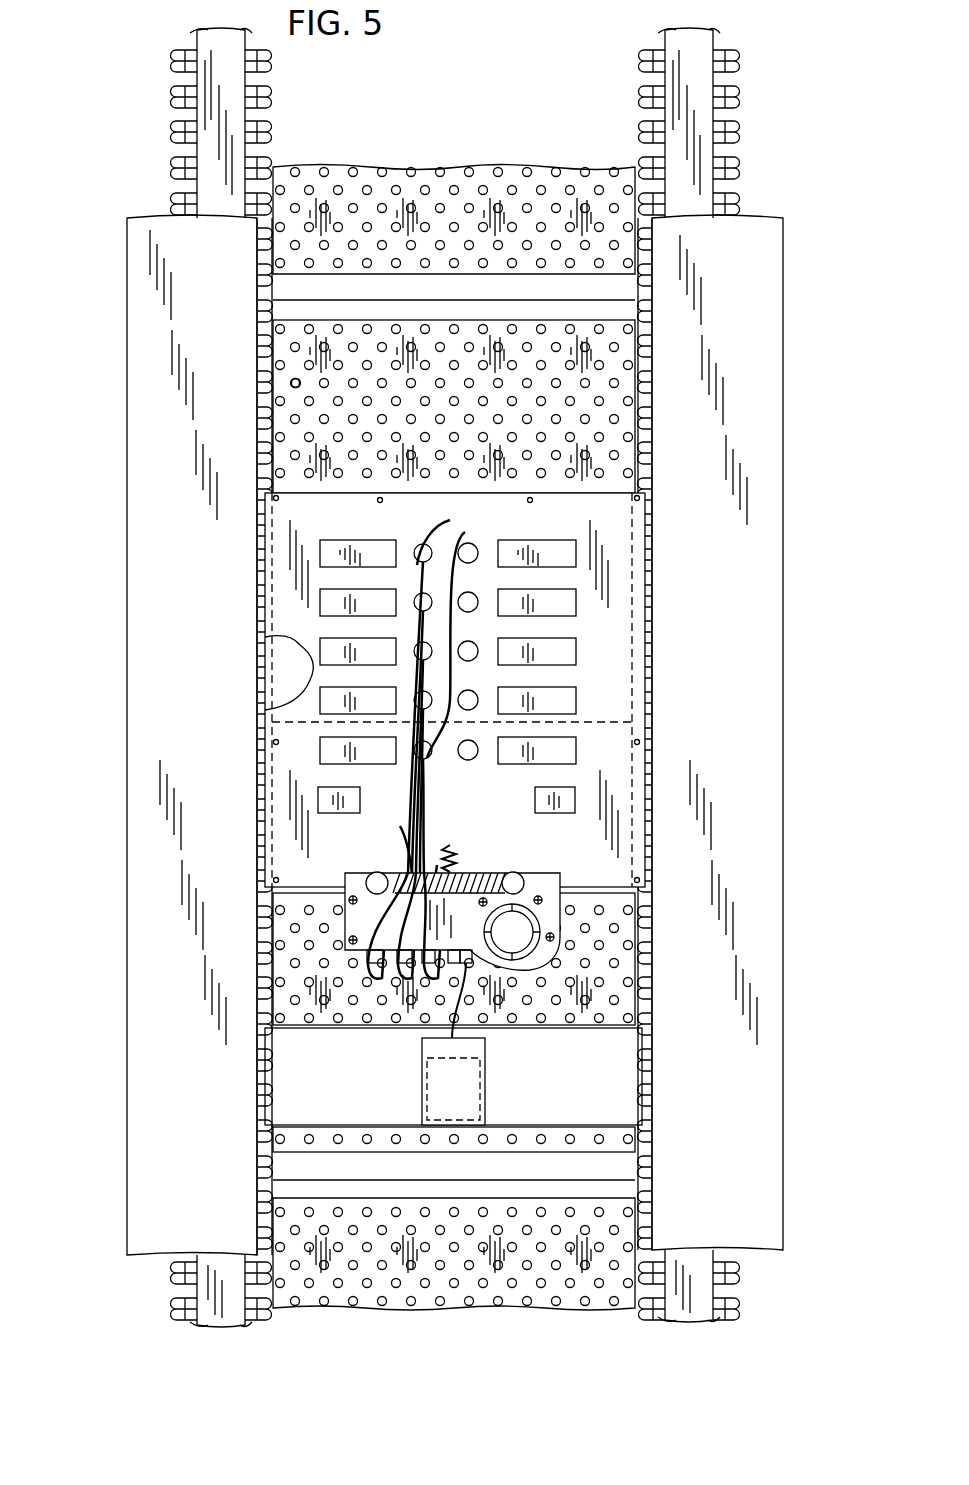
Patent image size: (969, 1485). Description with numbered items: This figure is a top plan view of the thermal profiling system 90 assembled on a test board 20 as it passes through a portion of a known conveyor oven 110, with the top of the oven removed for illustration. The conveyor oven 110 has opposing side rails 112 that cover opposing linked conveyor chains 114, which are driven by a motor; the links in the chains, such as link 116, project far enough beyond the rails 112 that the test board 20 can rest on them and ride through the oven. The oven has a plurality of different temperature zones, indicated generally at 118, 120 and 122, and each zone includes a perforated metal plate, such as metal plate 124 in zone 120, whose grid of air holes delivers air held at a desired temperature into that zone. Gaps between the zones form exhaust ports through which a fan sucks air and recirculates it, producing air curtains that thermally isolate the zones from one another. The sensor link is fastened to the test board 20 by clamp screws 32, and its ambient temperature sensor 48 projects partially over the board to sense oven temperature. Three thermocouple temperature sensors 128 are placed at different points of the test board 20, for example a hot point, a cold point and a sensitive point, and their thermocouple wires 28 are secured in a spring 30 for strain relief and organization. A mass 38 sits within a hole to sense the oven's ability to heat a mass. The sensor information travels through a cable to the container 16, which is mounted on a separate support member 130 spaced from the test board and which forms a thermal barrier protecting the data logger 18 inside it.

The lighting fixture assembly 90 is at (433, 697).
The conveyor oven 110 is at (433, 735).
The side rails 112 is at (150, 468).
The linked conveyor chains 114 is at (262, 97).
The link 116 is at (655, 240).
The temperature zone 118 is at (364, 1308).
The temperature zone 120 is at (283, 383).
The temperature zone 122 is at (428, 161).
The perforated metal plate 124 is at (612, 360).
The temperature sensors 128 is at (450, 520).
The support member 130 is at (338, 1120).
The test board 20 is at (636, 664).
The thermocouple wires 28 is at (400, 826).
The spring 30 is at (437, 865).
The clamp screws 32 is at (521, 968).
The mass 38 is at (513, 940).
The ambient temperature sensor 48 is at (455, 838).
The container 16 is at (459, 1038).
The data logger 18 is at (433, 1083).